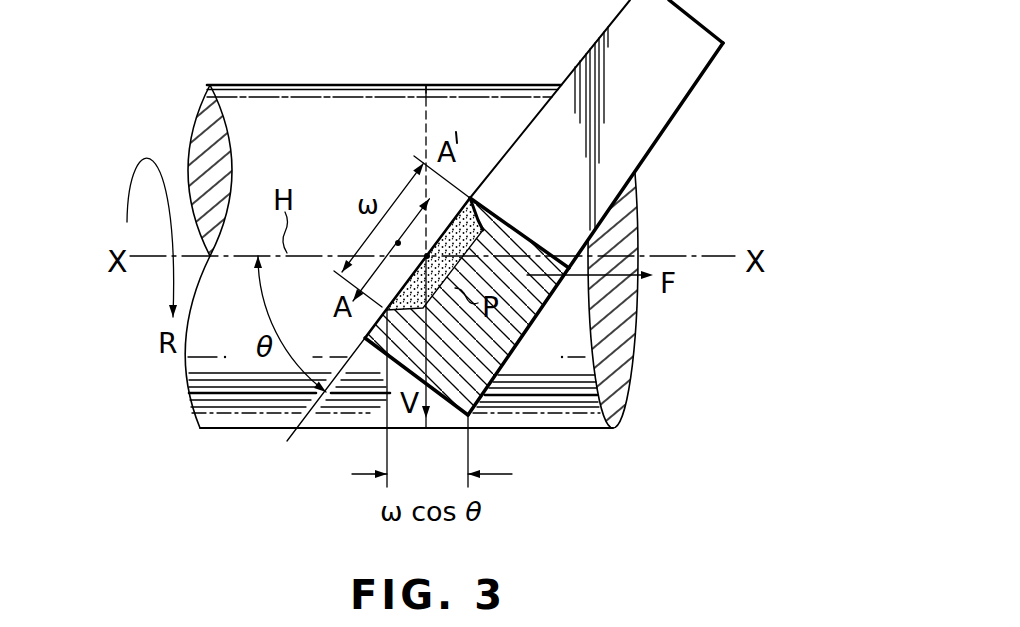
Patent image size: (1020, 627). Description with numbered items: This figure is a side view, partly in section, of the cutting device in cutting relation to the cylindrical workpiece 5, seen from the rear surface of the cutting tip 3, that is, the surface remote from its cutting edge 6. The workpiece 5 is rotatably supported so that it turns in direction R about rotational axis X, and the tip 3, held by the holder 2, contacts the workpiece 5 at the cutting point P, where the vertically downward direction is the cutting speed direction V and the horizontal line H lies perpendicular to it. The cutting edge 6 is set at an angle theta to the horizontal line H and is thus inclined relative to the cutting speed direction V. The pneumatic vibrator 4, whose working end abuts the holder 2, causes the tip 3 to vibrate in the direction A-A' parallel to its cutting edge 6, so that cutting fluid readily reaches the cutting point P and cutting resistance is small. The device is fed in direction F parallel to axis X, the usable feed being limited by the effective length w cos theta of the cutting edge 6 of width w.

The holder 2 is at (513, 333).
The cutting tip 3 is at (490, 232).
The pneumatic vibrator 4 is at (667, 107).
The cylindrical workpiece 5 is at (382, 84).
The cutting edge 6 is at (466, 210).